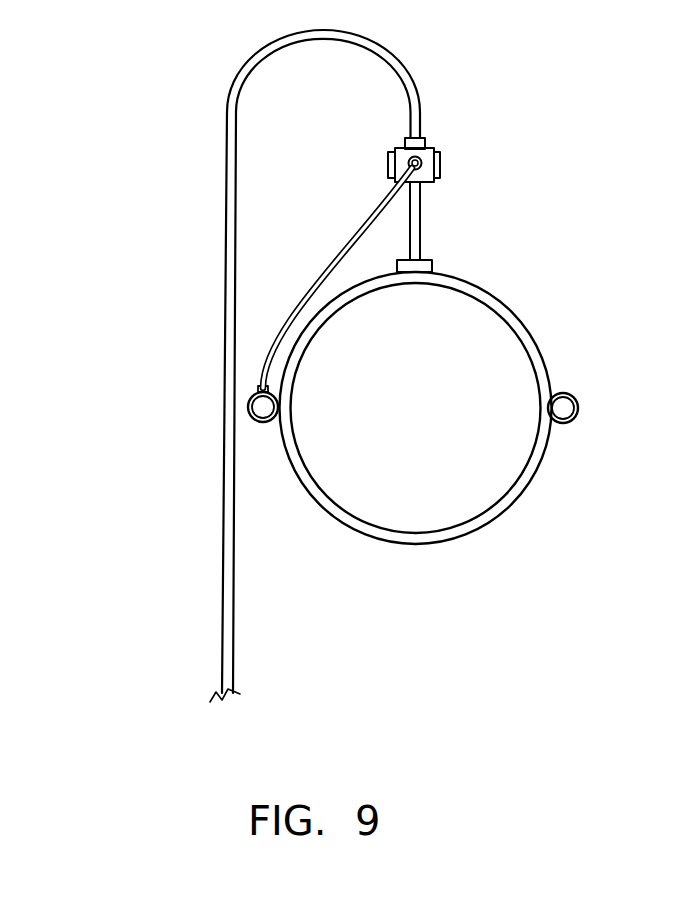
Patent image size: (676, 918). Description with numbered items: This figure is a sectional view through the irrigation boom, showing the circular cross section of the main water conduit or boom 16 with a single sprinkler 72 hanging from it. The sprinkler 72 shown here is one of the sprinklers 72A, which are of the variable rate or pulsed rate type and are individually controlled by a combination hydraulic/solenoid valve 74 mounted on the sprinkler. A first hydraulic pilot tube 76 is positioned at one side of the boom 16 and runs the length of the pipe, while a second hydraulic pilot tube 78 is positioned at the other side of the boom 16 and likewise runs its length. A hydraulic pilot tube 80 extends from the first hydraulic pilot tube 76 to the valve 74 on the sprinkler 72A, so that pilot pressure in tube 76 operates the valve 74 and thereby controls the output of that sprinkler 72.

The main water conduit or boom 16 is at (432, 544).
The sprinkler 72 is at (268, 638).
The sprinkler 72A is at (222, 596).
The combination hydraulic/solenoid valve 74 is at (442, 157).
The first hydraulic pilot tube 76 is at (252, 400).
The second hydraulic pilot tube 78 is at (563, 423).
The hydraulic pilot tube 80 is at (362, 232).